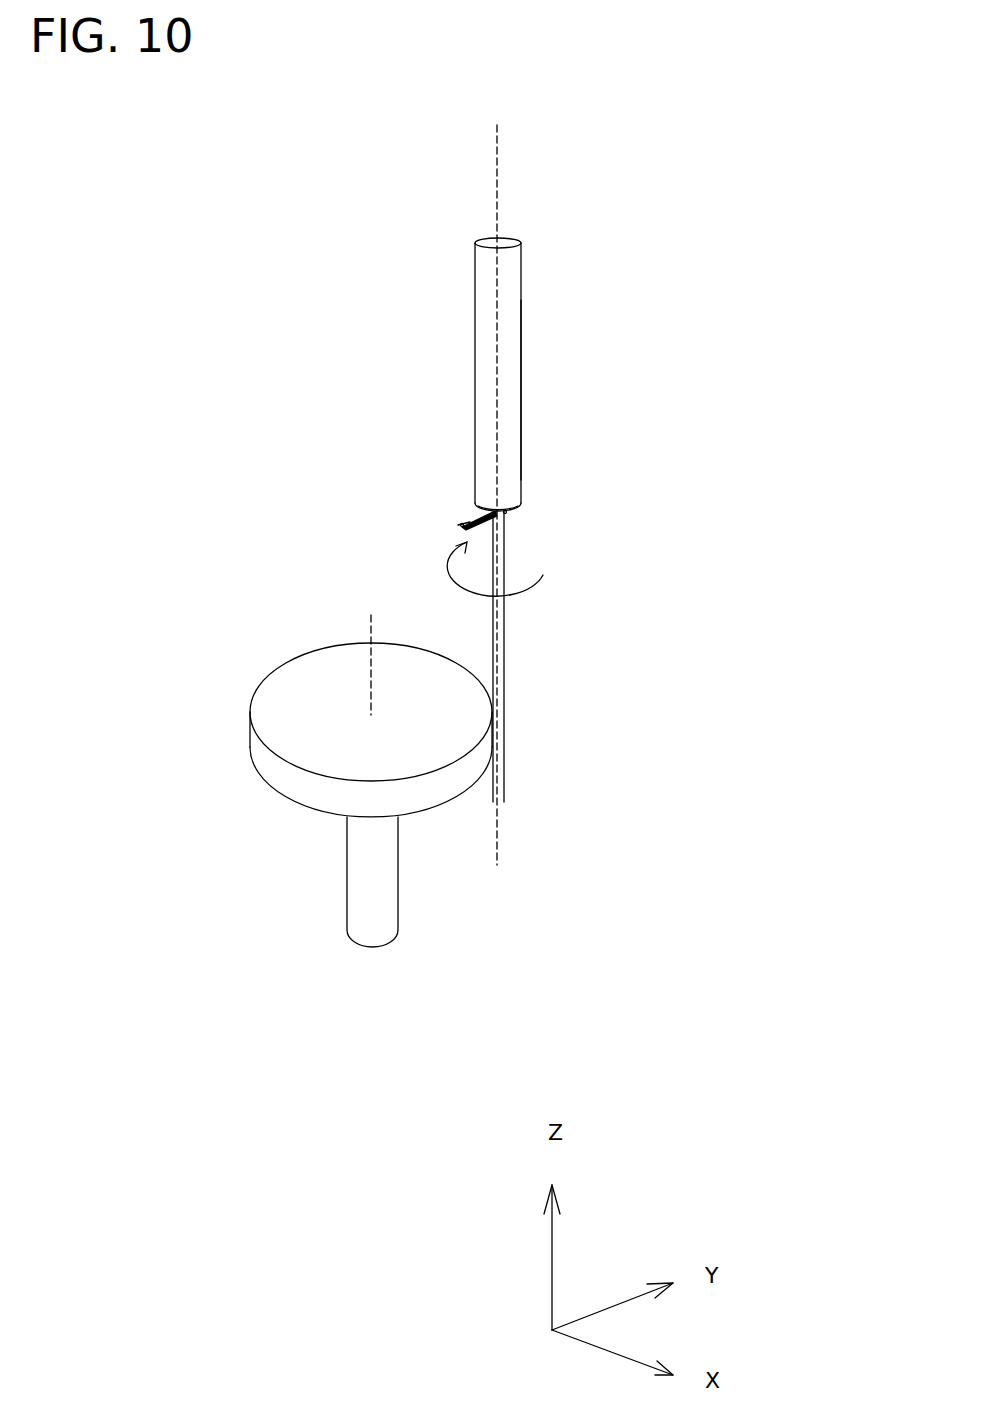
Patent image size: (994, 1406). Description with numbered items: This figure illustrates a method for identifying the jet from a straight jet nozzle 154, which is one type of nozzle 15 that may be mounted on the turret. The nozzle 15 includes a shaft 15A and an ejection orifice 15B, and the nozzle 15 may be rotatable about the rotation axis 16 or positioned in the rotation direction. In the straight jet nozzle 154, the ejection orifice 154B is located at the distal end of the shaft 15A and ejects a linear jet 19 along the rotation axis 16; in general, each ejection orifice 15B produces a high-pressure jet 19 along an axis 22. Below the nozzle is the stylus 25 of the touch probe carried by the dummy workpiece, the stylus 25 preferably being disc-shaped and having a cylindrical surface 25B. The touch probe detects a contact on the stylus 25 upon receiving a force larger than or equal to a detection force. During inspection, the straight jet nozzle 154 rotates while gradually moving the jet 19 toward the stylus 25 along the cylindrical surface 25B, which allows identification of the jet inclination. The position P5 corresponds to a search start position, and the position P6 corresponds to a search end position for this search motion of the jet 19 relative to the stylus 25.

The rotation axis 16 is at (500, 132).
The straight jet nozzle 154 is at (522, 336).
The nozzle 15 is at (549, 374).
The shaft 15A is at (522, 415).
The ejection orifice 154B is at (512, 527).
The ejection orifice 15B is at (552, 531).
The search end position P6 is at (458, 523).
The search start position P5 is at (506, 512).
The jet 19 is at (507, 693).
The axis 22 is at (508, 838).
The stylus 25 is at (351, 767).
The cylindrical surface 25B is at (296, 790).